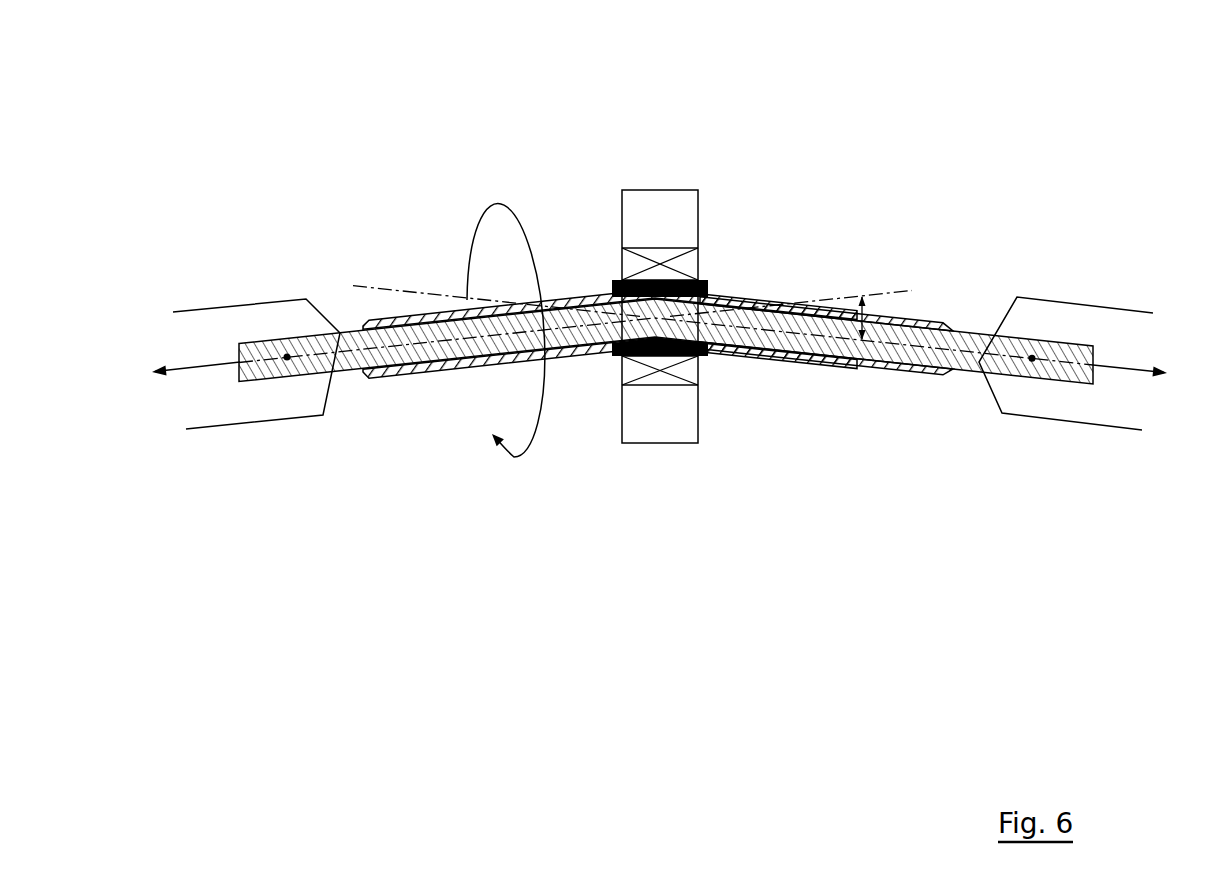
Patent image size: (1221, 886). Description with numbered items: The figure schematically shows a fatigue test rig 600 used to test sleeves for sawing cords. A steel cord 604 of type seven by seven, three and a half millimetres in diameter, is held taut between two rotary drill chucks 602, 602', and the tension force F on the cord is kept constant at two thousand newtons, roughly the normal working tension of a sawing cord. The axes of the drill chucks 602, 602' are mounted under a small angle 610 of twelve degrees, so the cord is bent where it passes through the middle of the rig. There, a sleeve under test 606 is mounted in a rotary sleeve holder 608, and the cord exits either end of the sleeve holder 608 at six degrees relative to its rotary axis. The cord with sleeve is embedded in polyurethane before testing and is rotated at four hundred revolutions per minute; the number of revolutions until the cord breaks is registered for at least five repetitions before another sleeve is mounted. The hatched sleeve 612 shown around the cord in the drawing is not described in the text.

The fatigue test rig 600 is at (212, 158).
The rotary drill chuck 602 is at (238, 411).
The rotary drill chuck 602' is at (1092, 322).
The steel cord 604 is at (666, 393).
The sleeve under test 606 is at (714, 265).
The rotary sleeve holder 608 is at (621, 357).
The small angle 610 is at (867, 318).
The sleeve 612 is at (658, 376).